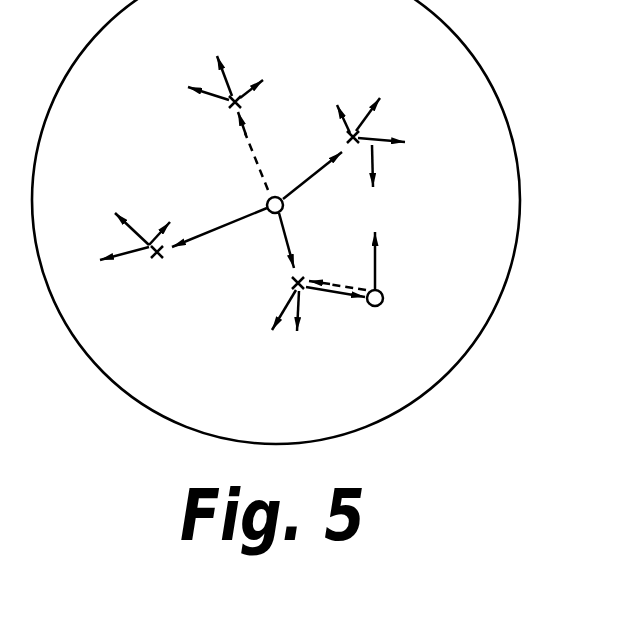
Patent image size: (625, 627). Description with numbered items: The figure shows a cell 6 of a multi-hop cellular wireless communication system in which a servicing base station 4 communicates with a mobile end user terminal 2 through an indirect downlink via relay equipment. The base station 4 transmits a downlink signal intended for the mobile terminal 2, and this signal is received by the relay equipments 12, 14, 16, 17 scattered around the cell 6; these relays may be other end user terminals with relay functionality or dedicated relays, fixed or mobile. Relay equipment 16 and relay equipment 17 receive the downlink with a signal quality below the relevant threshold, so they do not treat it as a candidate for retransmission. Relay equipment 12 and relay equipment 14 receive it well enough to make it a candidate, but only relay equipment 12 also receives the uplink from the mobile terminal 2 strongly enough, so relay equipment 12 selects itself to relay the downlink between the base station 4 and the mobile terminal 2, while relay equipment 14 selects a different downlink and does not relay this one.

The mobile end user terminal 2 is at (385, 293).
The base station 4 is at (266, 202).
The cell 6 is at (423, 393).
The relay equipment 12 is at (305, 292).
The relay equipment 14 is at (360, 140).
The relay equipment 16 is at (248, 102).
The relay equipment 17 is at (165, 253).